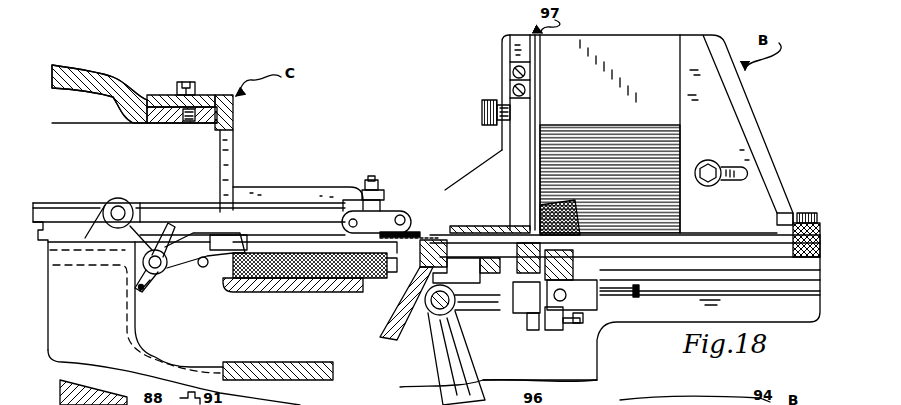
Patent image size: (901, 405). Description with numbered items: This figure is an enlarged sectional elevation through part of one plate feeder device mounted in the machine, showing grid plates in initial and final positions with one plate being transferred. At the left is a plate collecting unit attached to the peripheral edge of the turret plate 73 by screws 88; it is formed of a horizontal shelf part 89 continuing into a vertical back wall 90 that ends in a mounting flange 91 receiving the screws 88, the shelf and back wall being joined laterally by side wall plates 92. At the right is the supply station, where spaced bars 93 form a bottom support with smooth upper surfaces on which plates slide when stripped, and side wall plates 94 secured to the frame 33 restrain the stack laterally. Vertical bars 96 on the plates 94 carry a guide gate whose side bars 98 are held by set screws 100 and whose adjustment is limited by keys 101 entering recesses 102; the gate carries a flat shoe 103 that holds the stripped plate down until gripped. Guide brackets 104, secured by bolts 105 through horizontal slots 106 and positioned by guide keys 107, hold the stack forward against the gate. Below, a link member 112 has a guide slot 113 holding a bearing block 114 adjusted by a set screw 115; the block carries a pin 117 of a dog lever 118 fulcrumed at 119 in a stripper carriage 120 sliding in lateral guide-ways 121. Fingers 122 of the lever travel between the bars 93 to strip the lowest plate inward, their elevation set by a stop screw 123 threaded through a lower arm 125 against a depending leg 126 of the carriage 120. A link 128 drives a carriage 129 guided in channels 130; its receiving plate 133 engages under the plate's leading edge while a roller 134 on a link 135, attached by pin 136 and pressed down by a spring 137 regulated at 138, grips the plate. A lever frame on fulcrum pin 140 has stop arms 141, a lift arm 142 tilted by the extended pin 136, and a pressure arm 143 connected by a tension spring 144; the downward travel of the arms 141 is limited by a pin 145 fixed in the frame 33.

The frame 33 is at (598, 380).
The turret plate 73 is at (77, 113).
The screws 88 is at (195, 80).
The horizontal shelf part 89 is at (263, 293).
The vertical back wall 90 is at (233, 127).
The mounting flange 91 is at (222, 93).
The side wall plates 92 is at (247, 197).
The spaced bars 93 is at (778, 238).
The side wall plates 94 is at (648, 45).
The vertical bars 96 is at (518, 43).
The side bars 98 is at (540, 108).
The set screws 100 is at (483, 112).
The keys 101 is at (513, 80).
The recesses 102 is at (536, 105).
The flat shoe 103 is at (473, 226).
The guide brackets 104 is at (727, 105).
The bolts 105 is at (712, 171).
The horizontal slots 106 is at (742, 172).
The guide keys 107 is at (784, 212).
The link member 112 is at (475, 303).
The longitudinal guide slot 113 is at (518, 314).
The bearing block 114 is at (590, 298).
The set screw 115 is at (638, 295).
The pin 117 is at (570, 323).
The dog lever 118 is at (599, 271).
The fulcrum 119 is at (572, 262).
The stripper carriage 120 is at (482, 262).
The lateral guide-ways 121 is at (732, 276).
The fingers 122 is at (517, 227).
The stop screw 123 is at (582, 322).
The lower arm 125 is at (552, 330).
The depending leg 126 is at (531, 331).
The link 128 is at (68, 200).
The carriage 129 is at (150, 199).
The channels 130 is at (60, 250).
The receiving plate 133 is at (400, 238).
The roller 134 is at (406, 209).
The link 135 is at (389, 204).
The pin 136 is at (343, 224).
The spring 137 is at (384, 190).
The tension adjustment 138 is at (371, 175).
The fulcrum pin 140 is at (160, 268).
The stop arms 141 is at (232, 233).
The lift arm 142 is at (157, 248).
The pressure arm 143 is at (150, 289).
The tension spring 144 is at (138, 288).
The pin 145 is at (204, 268).